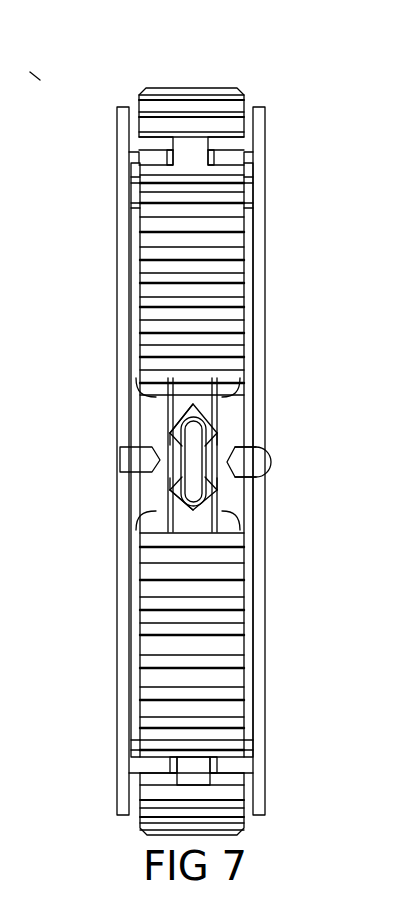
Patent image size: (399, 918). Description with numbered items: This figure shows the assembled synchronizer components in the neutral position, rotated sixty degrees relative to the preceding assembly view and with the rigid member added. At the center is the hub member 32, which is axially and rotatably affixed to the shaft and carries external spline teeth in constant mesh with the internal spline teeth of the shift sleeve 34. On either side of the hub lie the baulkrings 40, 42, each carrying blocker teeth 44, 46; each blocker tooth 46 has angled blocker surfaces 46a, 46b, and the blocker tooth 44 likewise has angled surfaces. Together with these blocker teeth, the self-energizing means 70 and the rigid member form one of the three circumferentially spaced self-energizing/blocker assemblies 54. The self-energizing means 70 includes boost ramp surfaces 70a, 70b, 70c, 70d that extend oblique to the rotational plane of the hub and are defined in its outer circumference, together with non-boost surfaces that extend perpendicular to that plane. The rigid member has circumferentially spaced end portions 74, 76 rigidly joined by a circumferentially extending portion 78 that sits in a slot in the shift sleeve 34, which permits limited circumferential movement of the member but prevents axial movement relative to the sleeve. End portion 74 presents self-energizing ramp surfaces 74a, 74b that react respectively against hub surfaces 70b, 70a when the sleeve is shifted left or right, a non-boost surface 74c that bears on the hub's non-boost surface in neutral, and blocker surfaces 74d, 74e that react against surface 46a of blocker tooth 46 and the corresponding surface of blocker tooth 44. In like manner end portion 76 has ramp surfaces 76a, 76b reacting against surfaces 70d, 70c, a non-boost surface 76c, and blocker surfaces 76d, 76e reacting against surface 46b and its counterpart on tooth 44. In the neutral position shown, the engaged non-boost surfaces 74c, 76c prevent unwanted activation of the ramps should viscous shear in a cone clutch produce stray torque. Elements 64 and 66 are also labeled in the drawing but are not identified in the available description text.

The hub member 32 is at (250, 94).
The shift sleeve 34 is at (30, 72).
The baulkring 40 is at (104, 247).
The baulkring 42 is at (279, 238).
The blocker tooth 44 is at (126, 466).
The blocker tooth 46 is at (258, 462).
The angled blocker surface 46a is at (258, 447).
The angled blocker surface 46b is at (260, 477).
The self-energizing/blocker assembly 54 is at (168, 405).
The left retaining notch 64 is at (137, 153).
The right retaining notch 66 is at (242, 155).
The self-energizing means 70 is at (172, 392).
The self-energizing ramp surface 70a is at (152, 422).
The self-energizing ramp surface 70b is at (236, 395).
The self-energizing ramp surface 70c is at (143, 525).
The self-energizing ramp surface 70d is at (228, 515).
The end portion 74 is at (222, 405).
The self-energizing ramp surface 74a is at (170, 413).
The self-energizing ramp surface 74b is at (210, 428).
The non-boost surface 74c is at (193, 403).
The blocker surface 74d is at (180, 440).
The blocker surface 74e is at (220, 437).
The end portion 76 is at (178, 514).
The self-energizing ramp surface 76a is at (165, 500).
The self-energizing ramp surface 76b is at (218, 490).
The non-boost surface 76c is at (191, 522).
The blocker surface 76d is at (167, 480).
The blocker surface 76e is at (222, 484).
The circumferentially extending portion 78 is at (130, 458).